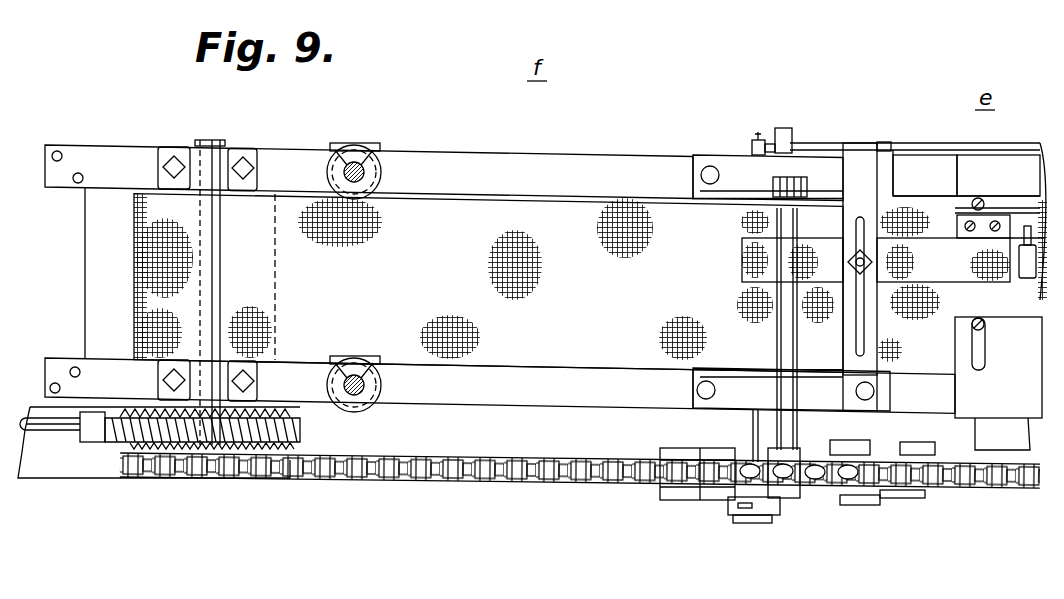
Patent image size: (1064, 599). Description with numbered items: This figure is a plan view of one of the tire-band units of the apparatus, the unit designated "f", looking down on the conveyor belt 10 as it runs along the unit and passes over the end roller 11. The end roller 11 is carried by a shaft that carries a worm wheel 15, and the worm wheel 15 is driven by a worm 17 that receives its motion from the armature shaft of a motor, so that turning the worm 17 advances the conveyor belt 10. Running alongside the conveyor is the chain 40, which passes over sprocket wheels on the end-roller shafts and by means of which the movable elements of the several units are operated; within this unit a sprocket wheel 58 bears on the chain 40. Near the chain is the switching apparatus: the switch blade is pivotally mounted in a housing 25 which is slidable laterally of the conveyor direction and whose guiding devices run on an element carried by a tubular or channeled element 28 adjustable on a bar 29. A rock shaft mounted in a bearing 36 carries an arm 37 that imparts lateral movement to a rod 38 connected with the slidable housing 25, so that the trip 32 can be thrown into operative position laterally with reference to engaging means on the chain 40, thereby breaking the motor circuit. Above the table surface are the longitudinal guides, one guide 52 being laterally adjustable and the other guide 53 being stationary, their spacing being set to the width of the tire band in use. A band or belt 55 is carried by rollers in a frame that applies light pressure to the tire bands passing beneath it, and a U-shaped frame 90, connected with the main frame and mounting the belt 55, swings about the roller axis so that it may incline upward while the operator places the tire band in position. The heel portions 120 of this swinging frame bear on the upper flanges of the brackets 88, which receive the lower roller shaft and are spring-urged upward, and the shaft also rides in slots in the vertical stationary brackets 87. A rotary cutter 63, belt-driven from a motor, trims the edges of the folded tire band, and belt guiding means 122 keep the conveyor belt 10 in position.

The conveyor belt 10 is at (537, 283).
The end roller 11 is at (262, 273).
The worm wheel 15 is at (305, 435).
The worm 17 is at (115, 455).
The housing 25 is at (775, 508).
The tubular or channeled element 28 is at (740, 448).
The bar 29 is at (665, 488).
The trip 32 is at (745, 508).
The bearing 36 is at (790, 128).
The arm 37 is at (760, 140).
The rod 38 is at (752, 147).
The chain 40 is at (466, 484).
The laterally adjustable guide 52 is at (1008, 333).
The stationary guide 53 is at (1000, 202).
The band or belt 55 is at (742, 264).
The sprocket wheel 58 is at (725, 482).
The rotary cutter 63 is at (980, 264).
The vertical stationary bracket 87 is at (728, 200).
The bracket 88 is at (693, 177).
The U-shaped frame 90 is at (870, 330).
The heel portion 120 is at (722, 192).
The belt guiding means 122 is at (384, 182).